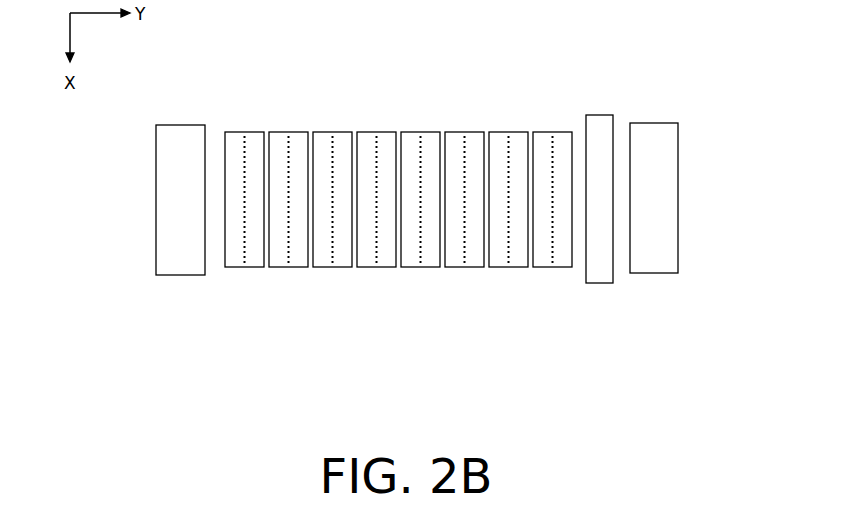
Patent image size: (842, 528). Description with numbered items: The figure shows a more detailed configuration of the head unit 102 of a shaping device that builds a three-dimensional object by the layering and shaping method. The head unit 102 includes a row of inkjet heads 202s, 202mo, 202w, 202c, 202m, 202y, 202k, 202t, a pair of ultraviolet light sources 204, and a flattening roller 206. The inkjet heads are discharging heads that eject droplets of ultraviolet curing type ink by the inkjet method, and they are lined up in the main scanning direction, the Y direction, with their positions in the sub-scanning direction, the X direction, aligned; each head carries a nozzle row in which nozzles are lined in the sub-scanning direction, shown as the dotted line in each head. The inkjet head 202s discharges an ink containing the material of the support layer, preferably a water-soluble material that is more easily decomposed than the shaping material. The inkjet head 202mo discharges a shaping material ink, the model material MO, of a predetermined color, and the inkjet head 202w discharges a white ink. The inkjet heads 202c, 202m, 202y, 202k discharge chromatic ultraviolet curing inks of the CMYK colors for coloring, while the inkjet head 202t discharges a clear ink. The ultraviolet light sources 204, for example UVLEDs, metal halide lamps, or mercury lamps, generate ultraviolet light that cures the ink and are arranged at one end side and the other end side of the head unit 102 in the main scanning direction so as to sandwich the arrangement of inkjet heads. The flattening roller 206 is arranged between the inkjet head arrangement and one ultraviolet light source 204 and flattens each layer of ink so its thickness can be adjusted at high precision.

The head unit 102 is at (643, 46).
The ultraviolet light source 204 is at (164, 275).
The flattening roller 206 is at (602, 117).
The inkjet head 202s is at (233, 267).
The inkjet head 202mo is at (276, 267).
The inkjet head 202w is at (320, 267).
The inkjet head 202c is at (367, 267).
The inkjet head 202m is at (411, 267).
The inkjet head 202y is at (455, 267).
The inkjet head 202k is at (499, 267).
The inkjet head 202t is at (543, 267).